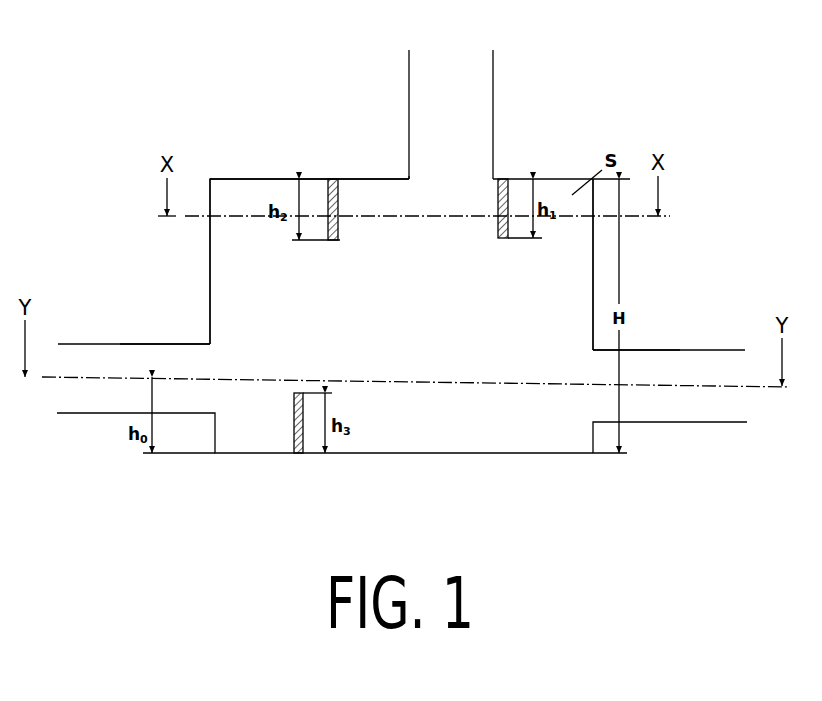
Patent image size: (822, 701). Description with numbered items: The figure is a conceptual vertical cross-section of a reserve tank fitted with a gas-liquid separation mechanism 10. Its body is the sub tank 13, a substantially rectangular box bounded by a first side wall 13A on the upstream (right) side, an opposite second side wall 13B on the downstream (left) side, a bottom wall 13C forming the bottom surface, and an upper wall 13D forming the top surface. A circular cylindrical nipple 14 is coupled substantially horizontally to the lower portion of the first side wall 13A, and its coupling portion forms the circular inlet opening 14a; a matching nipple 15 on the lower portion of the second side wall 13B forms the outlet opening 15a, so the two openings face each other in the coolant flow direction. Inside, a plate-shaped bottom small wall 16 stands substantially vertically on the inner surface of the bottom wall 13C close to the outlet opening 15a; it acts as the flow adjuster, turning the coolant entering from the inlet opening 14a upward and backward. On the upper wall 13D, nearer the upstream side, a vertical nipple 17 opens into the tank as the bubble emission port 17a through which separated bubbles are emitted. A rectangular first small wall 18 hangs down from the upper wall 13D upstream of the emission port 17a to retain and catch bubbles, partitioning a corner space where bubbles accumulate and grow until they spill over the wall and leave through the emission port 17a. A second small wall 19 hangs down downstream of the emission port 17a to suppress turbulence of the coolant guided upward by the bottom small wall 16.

The gas-liquid separation mechanism 10 is at (341, 128).
The sub tank 13 is at (570, 178).
The first side wall 13A is at (593, 273).
The second side wall 13B is at (209, 267).
The bottom wall 13C is at (490, 454).
The upper wall 13D is at (292, 178).
The nipple 14 is at (716, 350).
The inlet opening 14a is at (594, 358).
The nipple 15 is at (114, 344).
The outlet opening 15a is at (202, 366).
The bottom small wall 16 is at (293, 418).
The nipple 17 is at (495, 95).
The bubble emission port 17a is at (456, 178).
The first small wall 18 is at (497, 231).
The second small wall 19 is at (339, 237).